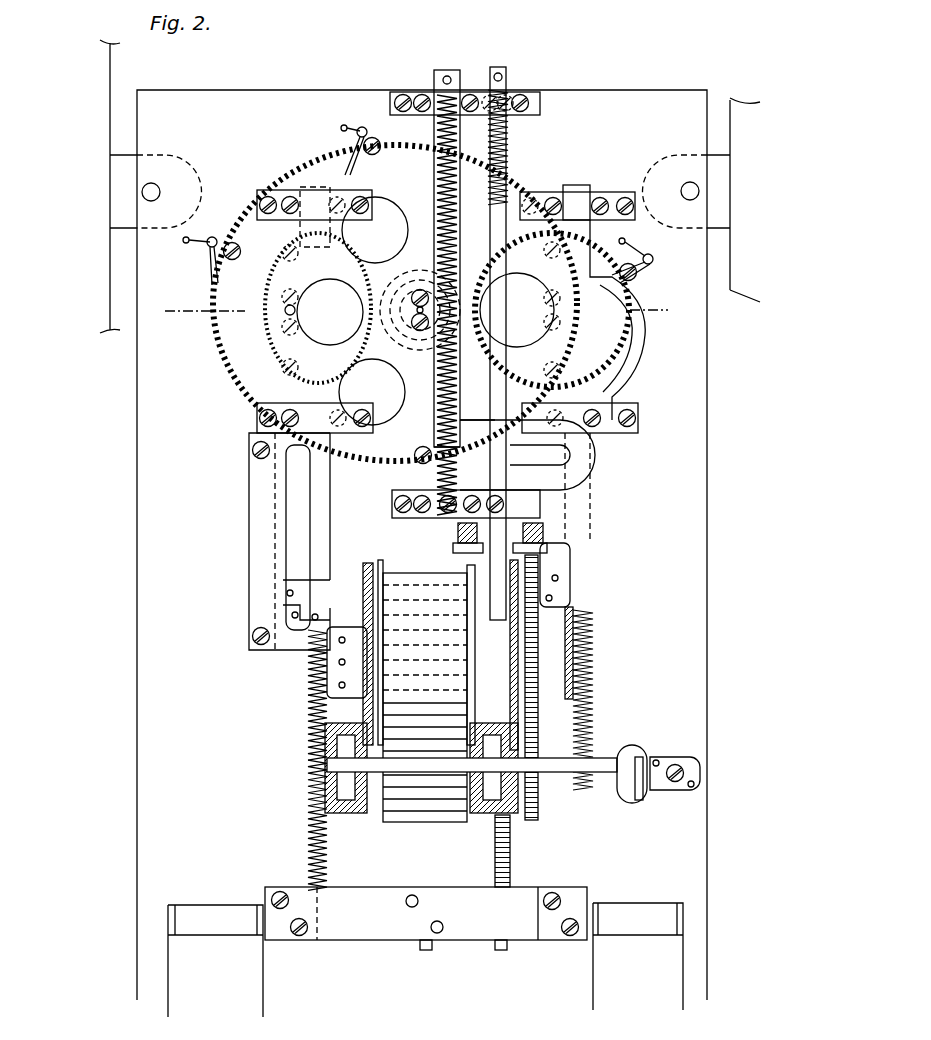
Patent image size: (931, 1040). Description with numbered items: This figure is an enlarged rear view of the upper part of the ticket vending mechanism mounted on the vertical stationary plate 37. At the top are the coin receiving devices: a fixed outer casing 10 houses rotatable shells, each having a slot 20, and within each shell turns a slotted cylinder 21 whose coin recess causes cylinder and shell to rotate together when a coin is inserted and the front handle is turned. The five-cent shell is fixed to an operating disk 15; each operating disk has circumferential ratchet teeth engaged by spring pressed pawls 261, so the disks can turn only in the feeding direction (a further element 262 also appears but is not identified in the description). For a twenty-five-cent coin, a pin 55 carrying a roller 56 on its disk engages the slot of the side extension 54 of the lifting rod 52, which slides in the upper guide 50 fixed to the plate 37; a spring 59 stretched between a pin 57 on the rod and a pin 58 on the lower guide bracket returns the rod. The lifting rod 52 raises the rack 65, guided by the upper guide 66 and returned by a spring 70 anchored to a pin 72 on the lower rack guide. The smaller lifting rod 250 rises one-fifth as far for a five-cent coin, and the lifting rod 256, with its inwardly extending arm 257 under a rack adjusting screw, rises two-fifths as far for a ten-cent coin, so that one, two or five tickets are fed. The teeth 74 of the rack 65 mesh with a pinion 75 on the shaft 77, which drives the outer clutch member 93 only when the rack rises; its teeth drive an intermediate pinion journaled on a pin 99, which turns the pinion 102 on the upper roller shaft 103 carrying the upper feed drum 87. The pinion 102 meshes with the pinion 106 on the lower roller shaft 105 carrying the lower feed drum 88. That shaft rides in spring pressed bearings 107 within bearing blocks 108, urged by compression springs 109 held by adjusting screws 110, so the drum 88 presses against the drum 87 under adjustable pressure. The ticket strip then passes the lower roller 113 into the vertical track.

The outer casing 10 is at (467, 180).
The operating disk 15 is at (620, 270).
The slot 20 is at (422, 311).
The slotted cylinder 21 is at (240, 345).
The vertical stationary plate 37 is at (150, 518).
The upper guide 50 is at (408, 92).
The lifting rod 52 is at (453, 145).
The side extension 54 is at (585, 478).
The pin 55 is at (432, 172).
The roller 56 is at (400, 155).
The pin 57 is at (448, 78).
The pin 58 is at (450, 508).
The spring 59 is at (450, 137).
The rack 65 is at (500, 515).
The upper guide 66 is at (507, 95).
The spring 70 is at (507, 182).
The pin 72 is at (499, 75).
The teeth 74 is at (510, 868).
The pinion 75 is at (592, 680).
The shaft 77 is at (343, 662).
The upper feed drum 87 is at (363, 593).
The lower feed drum 88 is at (403, 800).
The outer clutch member 93 is at (568, 618).
The pin 99 is at (540, 578).
The pinion 102 is at (537, 620).
The upper roller shaft 103 is at (580, 645).
The lower roller shaft 105 is at (330, 765).
The pinion 106 is at (540, 790).
The spring pressed bearings 107 is at (330, 755).
The bearing blocks 108 is at (325, 728).
The compression springs 109 is at (330, 800).
The adjusting screws 110 is at (330, 820).
The lower roller 113 is at (437, 873).
The lifting rod 250 is at (640, 370).
The lifting rod 256 is at (318, 493).
The arm 257 is at (358, 588).
The spring pressed pawls 261 is at (350, 153).
The pawl 262 is at (228, 258).